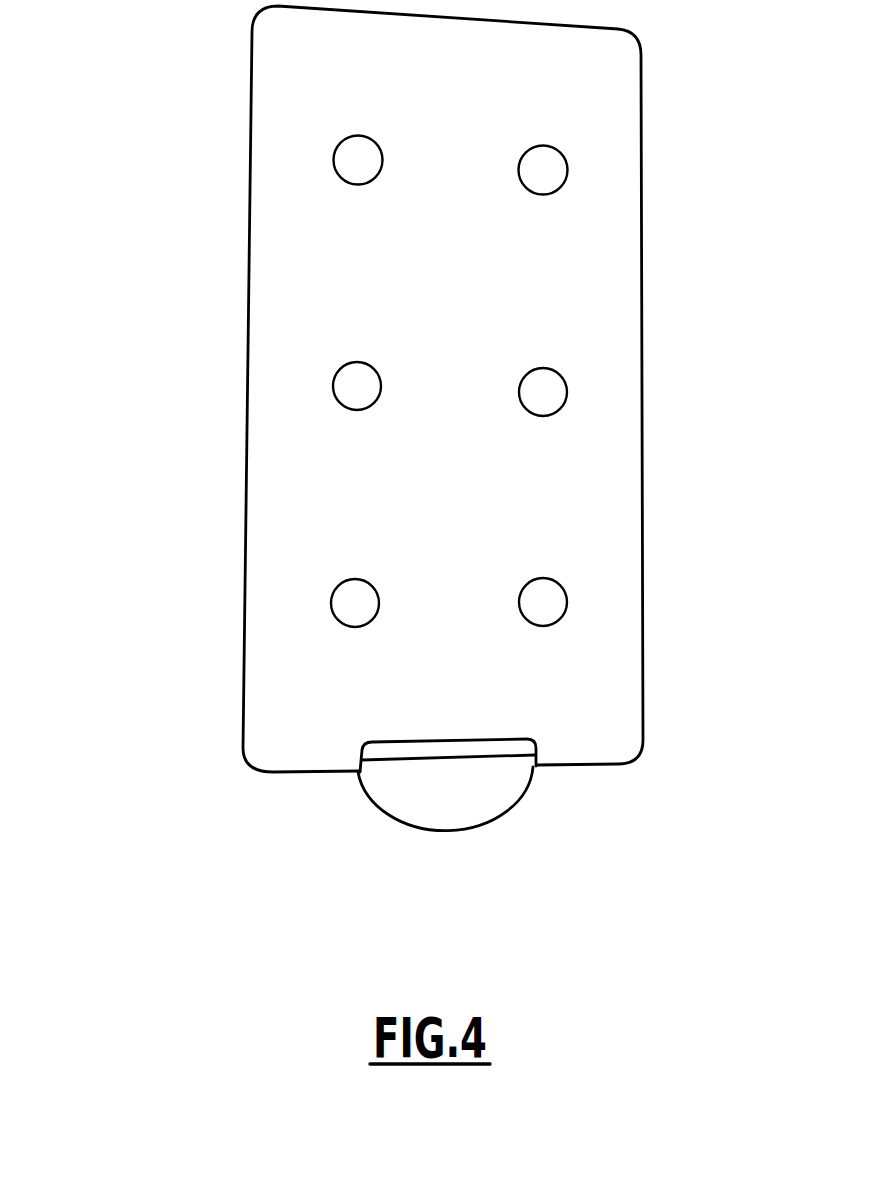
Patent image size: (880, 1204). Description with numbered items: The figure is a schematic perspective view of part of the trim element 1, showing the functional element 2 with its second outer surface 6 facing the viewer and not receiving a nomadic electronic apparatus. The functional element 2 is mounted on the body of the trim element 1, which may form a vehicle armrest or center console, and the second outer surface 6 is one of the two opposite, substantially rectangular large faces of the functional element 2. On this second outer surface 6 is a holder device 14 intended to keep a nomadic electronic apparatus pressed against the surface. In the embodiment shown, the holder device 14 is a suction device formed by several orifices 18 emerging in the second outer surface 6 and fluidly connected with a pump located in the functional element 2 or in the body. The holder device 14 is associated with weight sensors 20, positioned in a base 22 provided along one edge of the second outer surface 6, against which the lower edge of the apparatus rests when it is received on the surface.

The trim element 1 is at (410, 459).
The functional element 2 is at (401, 389).
The second outer surface 6 is at (310, 252).
The holder device 14 is at (543, 392).
The orifices 18 is at (358, 160).
The weight sensors 20 is at (428, 752).
The base 22 is at (468, 807).